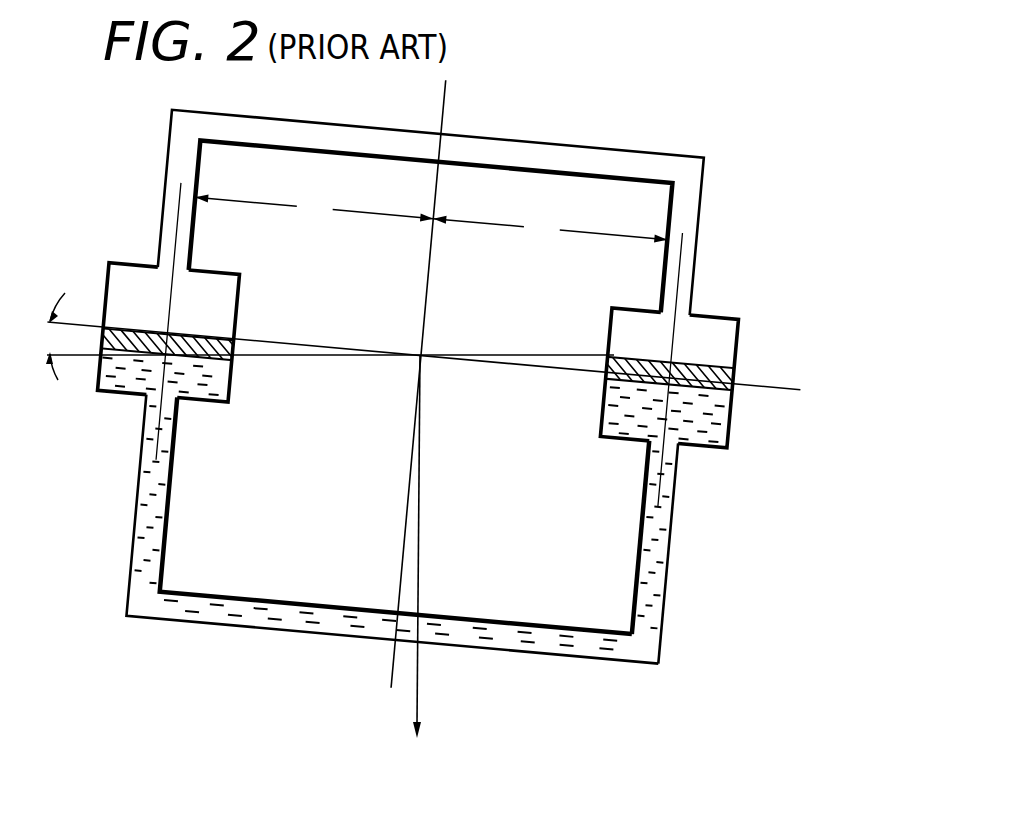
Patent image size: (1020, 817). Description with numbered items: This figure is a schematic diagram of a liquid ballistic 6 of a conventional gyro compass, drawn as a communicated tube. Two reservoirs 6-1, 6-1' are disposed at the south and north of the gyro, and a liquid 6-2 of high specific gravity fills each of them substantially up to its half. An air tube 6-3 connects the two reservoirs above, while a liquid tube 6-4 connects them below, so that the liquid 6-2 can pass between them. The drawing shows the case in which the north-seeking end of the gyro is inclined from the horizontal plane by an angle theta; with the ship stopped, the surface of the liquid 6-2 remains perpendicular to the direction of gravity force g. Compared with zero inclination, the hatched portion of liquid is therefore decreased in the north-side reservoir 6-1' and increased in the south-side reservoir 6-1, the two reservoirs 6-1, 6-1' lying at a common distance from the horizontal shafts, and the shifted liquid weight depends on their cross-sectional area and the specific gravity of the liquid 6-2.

The liquid ballistic 6 is at (400, 105).
The reservoir 6-1 is at (690, 348).
The reservoir 6-1' is at (185, 369).
The liquid 6-2 is at (707, 442).
The air tube 6-3 is at (675, 156).
The liquid tube 6-4 is at (565, 658).